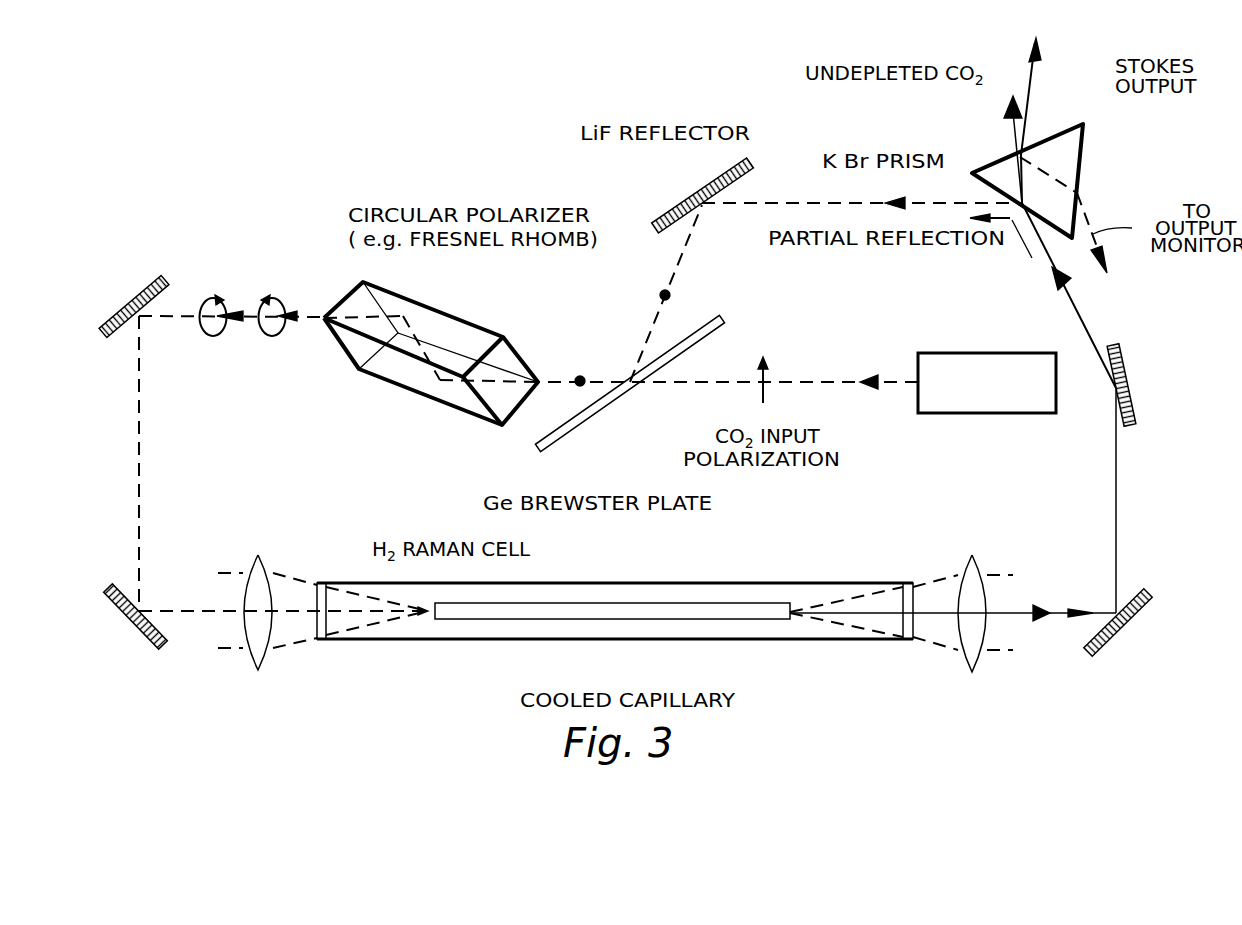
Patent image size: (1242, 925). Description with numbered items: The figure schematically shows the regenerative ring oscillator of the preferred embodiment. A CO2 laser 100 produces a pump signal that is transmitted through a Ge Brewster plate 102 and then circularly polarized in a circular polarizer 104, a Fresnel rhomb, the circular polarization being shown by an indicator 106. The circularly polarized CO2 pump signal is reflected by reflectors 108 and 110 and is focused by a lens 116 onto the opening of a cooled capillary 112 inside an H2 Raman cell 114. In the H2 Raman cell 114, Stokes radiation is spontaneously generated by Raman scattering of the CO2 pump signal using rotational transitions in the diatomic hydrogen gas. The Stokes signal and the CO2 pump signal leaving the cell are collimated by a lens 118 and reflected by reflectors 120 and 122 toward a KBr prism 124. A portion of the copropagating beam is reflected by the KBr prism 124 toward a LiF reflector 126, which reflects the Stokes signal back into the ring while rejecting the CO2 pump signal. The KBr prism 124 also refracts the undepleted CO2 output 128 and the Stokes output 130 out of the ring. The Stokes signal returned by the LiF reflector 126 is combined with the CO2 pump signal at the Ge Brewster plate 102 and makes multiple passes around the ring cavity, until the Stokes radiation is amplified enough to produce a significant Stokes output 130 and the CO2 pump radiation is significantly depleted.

The CO2 laser 100 is at (1005, 353).
The Ge Brewster plate 102 is at (572, 432).
The circular polarizer 104 is at (427, 305).
The indicator 106 is at (262, 300).
The reflector 108 is at (132, 292).
The reflector 110 is at (133, 628).
The cooled capillary 112 is at (665, 612).
The H2 Raman cell 114 is at (500, 583).
The lens 116 is at (257, 665).
The lens 118 is at (975, 663).
The reflector 120 is at (1120, 633).
The reflector 122 is at (1122, 360).
The KBr prism 124 is at (983, 180).
The LiF reflector 126 is at (705, 185).
The undepleted CO2 output 128 is at (1010, 123).
The Stokes output 130 is at (1030, 77).